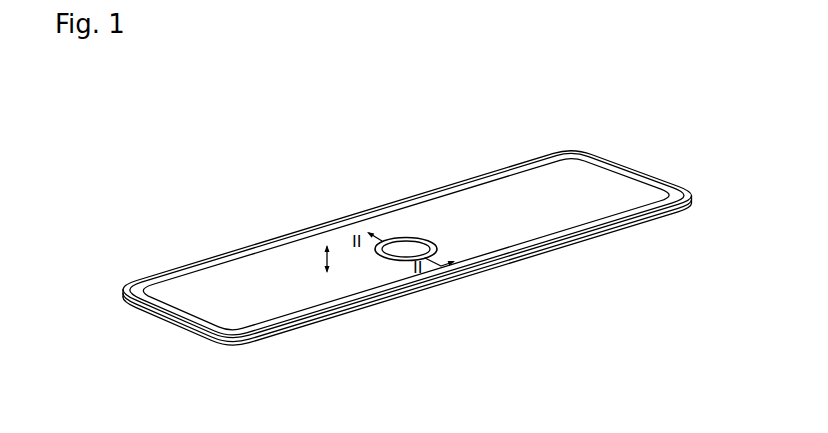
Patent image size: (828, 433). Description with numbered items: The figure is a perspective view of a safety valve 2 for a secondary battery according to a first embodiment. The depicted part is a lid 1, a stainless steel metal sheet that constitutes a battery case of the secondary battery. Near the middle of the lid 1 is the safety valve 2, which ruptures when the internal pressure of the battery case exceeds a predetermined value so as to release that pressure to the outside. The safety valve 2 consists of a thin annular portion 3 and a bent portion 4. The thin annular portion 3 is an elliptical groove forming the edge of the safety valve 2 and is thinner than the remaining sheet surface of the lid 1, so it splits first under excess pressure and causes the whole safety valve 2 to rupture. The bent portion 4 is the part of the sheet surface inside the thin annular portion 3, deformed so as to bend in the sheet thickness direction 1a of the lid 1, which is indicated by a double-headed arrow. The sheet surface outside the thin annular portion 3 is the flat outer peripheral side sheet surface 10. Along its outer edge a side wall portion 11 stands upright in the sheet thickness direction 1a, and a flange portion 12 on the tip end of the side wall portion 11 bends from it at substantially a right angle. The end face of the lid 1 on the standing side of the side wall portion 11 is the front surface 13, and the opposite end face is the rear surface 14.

The lid 1 is at (489, 169).
The sheet thickness direction 1a is at (322, 255).
The safety valve 2 is at (398, 240).
The thin annular portion 3 is at (395, 262).
The bent portion 4 is at (423, 233).
The outer peripheral side sheet surface 10 is at (507, 237).
The side wall portion 11 is at (581, 153).
The flange portion 12 is at (630, 165).
The front surface 13 is at (223, 287).
The rear surface 14 is at (253, 342).